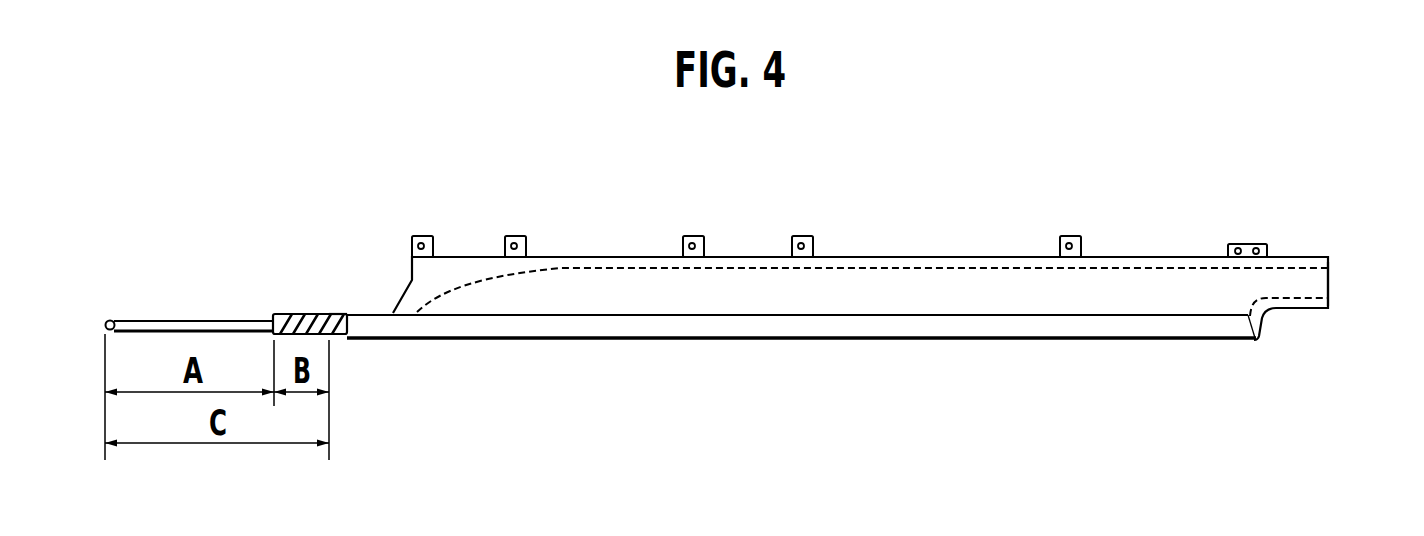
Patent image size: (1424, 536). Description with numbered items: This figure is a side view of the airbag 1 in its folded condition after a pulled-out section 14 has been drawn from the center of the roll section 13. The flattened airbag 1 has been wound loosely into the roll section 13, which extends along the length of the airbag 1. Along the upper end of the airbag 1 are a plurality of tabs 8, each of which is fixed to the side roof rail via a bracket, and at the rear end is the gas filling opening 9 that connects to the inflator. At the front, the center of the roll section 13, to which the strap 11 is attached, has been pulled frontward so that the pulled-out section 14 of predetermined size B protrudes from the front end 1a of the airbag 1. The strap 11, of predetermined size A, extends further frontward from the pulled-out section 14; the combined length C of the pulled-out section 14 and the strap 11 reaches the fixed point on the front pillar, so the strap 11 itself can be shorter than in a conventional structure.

The airbag 1 is at (928, 250).
The front end of the airbag 1a is at (330, 313).
The tabs 8 is at (422, 236).
The gas filling opening 9 is at (1329, 288).
The strap 11 is at (190, 320).
The roll section 13 is at (779, 334).
The pulled-out section 14 is at (291, 313).